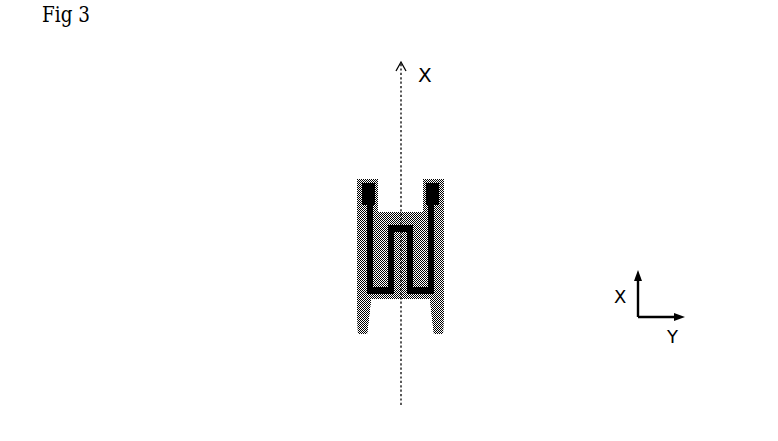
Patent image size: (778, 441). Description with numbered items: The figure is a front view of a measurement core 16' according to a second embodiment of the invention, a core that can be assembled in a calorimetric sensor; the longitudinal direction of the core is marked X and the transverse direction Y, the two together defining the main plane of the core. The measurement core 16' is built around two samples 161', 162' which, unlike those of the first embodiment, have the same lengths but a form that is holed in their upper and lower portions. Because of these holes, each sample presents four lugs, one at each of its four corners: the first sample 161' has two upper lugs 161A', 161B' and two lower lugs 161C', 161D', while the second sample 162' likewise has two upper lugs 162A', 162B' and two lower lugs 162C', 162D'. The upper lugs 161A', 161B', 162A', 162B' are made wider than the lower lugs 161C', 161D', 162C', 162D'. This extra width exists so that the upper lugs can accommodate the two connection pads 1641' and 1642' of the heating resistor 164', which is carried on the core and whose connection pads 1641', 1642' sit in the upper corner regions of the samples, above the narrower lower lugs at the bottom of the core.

The measurement core 16' is at (531, 245).
The sample 161' is at (447, 249).
The sample 162' is at (470, 273).
The heating resistor 164' is at (315, 256).
The connection pad 1641' is at (301, 184).
The connection pad 1642' is at (500, 182).
The upper lug 161A' is at (310, 157).
The upper lug 162A' is at (346, 157).
The upper lug 161B' is at (461, 154).
The upper lug 162B' is at (495, 154).
The lower lug 161C' is at (453, 354).
The lower lug 162C' is at (492, 354).
The lower lug 161D' is at (300, 355).
The lower lug 162D' is at (337, 355).